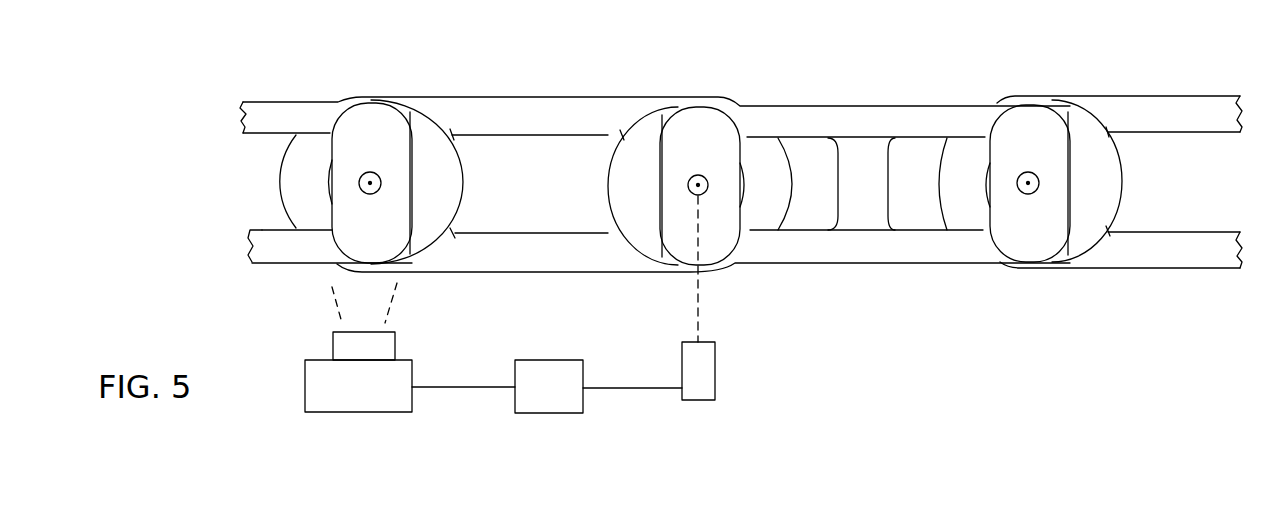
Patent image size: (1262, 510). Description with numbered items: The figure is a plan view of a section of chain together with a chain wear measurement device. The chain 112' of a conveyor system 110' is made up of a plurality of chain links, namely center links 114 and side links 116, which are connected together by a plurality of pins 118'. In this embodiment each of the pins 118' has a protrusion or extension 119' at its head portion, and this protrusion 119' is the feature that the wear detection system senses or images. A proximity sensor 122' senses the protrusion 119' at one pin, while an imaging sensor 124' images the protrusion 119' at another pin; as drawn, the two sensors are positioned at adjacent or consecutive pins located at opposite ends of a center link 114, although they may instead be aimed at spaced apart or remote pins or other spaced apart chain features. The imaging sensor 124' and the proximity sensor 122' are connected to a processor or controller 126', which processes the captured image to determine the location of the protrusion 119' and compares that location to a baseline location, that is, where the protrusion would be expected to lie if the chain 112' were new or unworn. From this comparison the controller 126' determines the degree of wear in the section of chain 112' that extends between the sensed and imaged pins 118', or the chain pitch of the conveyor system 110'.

The conveyor system 110' is at (165, 68).
The chain 112' is at (890, 241).
The center links 114 is at (563, 108).
The side links 116 is at (870, 118).
The pins 118' is at (701, 135).
The protrusion or extension 119' is at (793, 337).
The proximity sensor 122' is at (757, 298).
The imaging sensor 124' is at (358, 393).
The processor or controller 126' is at (541, 435).